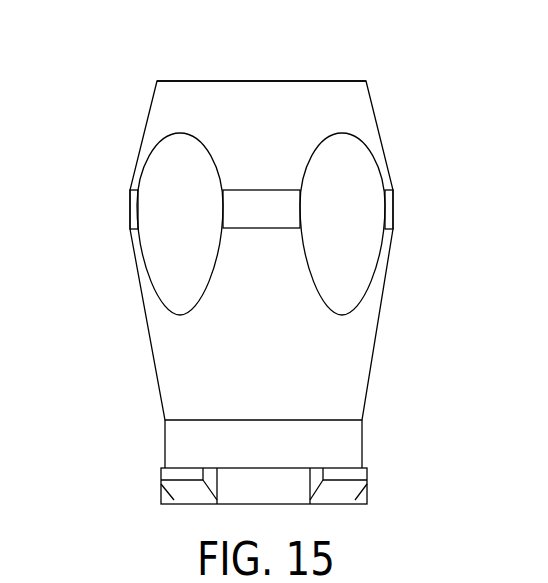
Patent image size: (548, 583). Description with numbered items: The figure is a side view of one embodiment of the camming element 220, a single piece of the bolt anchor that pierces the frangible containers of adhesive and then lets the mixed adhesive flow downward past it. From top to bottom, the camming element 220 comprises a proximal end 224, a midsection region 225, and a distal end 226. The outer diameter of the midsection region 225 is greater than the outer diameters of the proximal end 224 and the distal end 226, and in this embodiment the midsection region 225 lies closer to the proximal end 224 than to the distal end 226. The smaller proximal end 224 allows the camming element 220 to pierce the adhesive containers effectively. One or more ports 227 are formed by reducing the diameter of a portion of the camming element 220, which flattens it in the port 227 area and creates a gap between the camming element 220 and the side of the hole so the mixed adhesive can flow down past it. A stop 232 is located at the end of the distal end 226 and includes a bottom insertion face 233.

The camming element 220 is at (83, 305).
The proximal end 224 is at (178, 80).
The midsection region 225 is at (132, 212).
The distal end 226 is at (367, 495).
The port 227 is at (357, 185).
The stop 232 is at (162, 470).
The bottom insertion face 233 is at (177, 492).